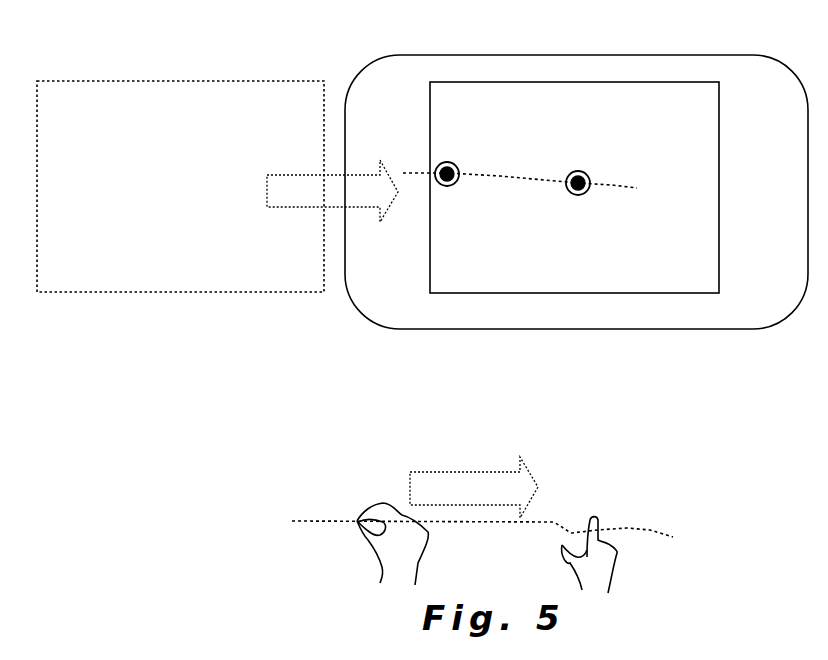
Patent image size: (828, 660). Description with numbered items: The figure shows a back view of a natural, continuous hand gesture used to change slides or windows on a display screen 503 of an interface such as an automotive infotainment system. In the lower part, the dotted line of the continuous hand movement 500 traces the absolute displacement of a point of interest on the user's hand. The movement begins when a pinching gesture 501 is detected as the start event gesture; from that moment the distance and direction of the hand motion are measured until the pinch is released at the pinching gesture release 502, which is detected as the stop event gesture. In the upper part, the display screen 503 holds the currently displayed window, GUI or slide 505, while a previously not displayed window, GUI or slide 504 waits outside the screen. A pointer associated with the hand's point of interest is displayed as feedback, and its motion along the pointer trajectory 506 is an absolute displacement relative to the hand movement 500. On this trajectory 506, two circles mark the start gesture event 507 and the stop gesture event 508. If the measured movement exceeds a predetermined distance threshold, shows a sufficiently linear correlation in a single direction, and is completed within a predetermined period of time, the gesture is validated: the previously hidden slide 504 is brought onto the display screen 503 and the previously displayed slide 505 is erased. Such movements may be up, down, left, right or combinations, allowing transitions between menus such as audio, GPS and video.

The continuous hand movement 500 is at (285, 521).
The pinching gesture 501 is at (353, 525).
The pinching gesture release 502 is at (565, 538).
The display screen 503 is at (687, 333).
The previously not displayed window, GUI or slide 504 is at (150, 230).
The previously displayed window, GUI or slide 505 is at (563, 297).
The pointer trajectory 506 is at (418, 168).
The start gesture event 507 is at (458, 153).
The stop gesture event 508 is at (585, 167).